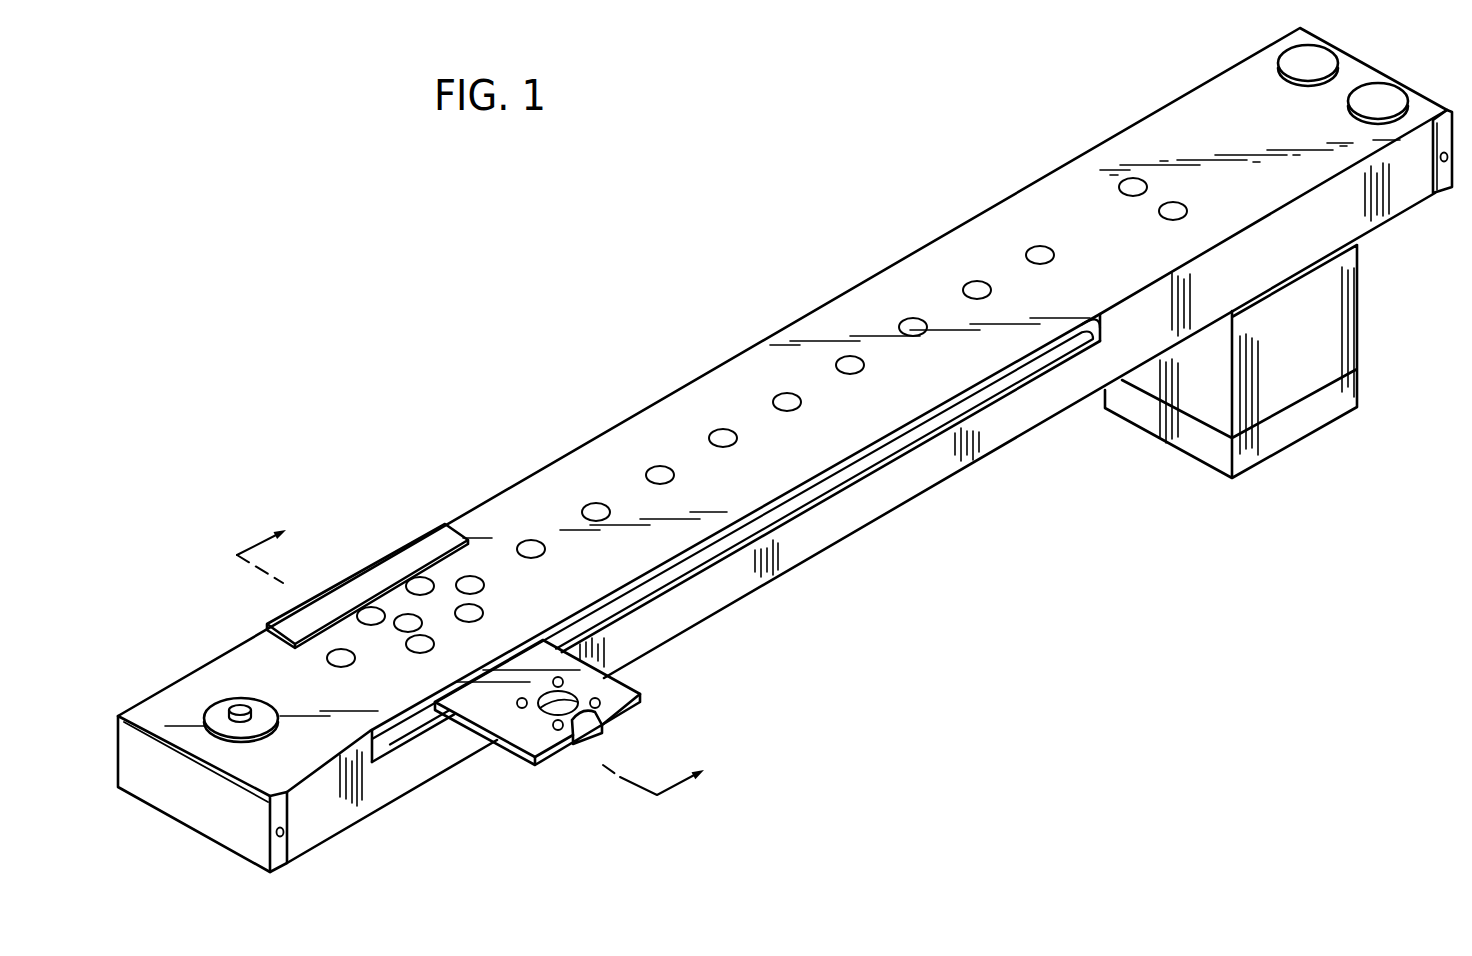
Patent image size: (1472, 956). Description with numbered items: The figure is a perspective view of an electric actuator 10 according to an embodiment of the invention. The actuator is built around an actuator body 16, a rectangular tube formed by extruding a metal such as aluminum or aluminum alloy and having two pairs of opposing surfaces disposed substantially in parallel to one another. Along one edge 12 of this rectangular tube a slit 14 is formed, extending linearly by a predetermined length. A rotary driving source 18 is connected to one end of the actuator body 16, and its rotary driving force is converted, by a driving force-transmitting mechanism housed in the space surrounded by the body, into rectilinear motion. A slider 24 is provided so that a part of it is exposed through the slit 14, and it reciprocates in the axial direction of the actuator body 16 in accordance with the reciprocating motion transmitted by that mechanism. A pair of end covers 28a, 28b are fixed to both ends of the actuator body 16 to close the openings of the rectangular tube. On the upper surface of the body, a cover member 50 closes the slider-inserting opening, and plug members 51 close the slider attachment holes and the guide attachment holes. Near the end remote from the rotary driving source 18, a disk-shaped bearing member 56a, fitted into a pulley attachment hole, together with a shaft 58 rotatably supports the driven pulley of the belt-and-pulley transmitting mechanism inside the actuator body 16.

The electric actuator 10 is at (635, 204).
The edge 12 is at (1130, 300).
The slit 14 is at (993, 382).
The actuator body 16 is at (648, 402).
The rotary driving source 18 is at (1364, 315).
The slider 24 is at (555, 750).
The end cover 28a is at (196, 814).
The end cover 28b is at (1445, 142).
The cover member 50 is at (375, 581).
The plug member 51 is at (977, 283).
The bearing member 56a is at (214, 716).
The shaft 58 is at (238, 705).